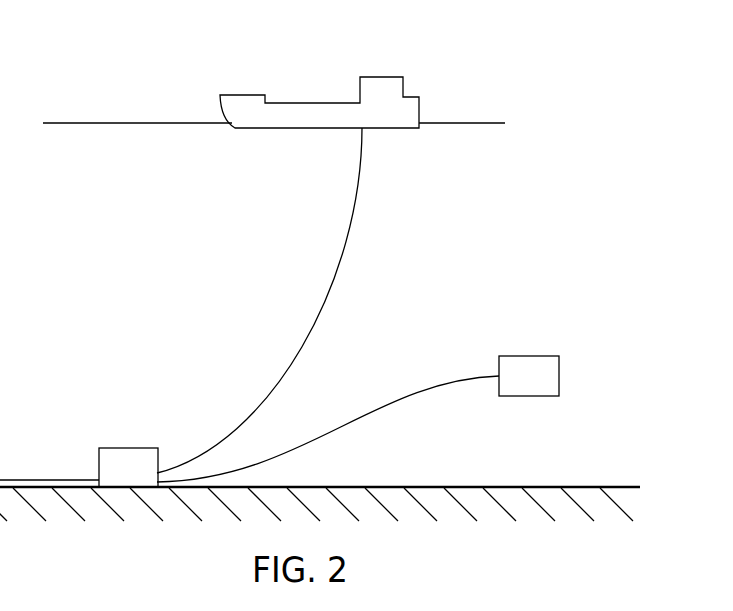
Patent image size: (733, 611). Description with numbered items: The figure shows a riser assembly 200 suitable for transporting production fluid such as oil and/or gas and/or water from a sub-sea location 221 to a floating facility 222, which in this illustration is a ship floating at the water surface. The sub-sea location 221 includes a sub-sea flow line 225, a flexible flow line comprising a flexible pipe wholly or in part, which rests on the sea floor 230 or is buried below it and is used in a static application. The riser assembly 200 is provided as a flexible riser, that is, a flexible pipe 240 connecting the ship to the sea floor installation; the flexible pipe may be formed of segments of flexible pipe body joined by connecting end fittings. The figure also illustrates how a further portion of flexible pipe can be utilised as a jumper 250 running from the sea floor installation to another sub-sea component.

The riser assembly 200 is at (187, 293).
The floating facility 222 is at (240, 96).
The flexible pipe 240 is at (308, 335).
The jumper 250 is at (430, 382).
The sub-sea location 221 is at (125, 448).
The sub-sea flow line 225 is at (47, 479).
The sea floor 230 is at (587, 487).